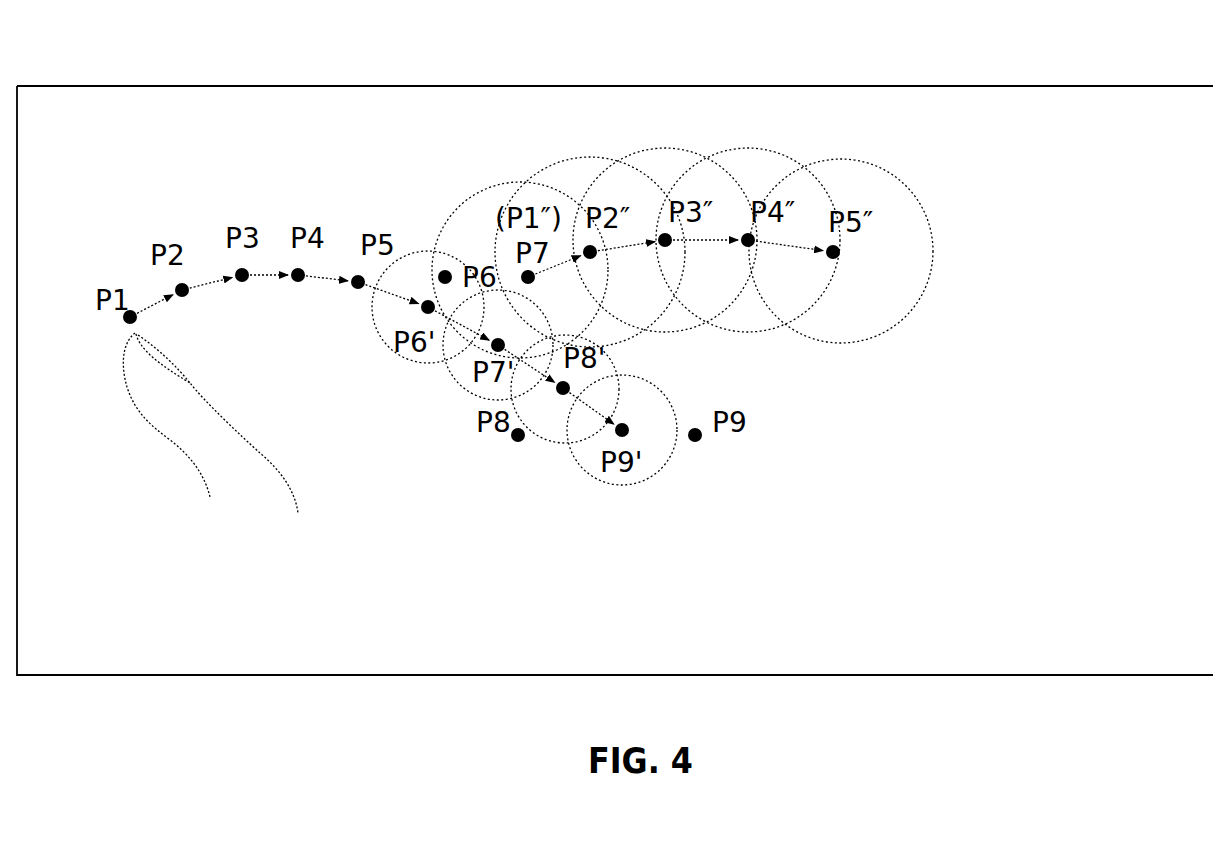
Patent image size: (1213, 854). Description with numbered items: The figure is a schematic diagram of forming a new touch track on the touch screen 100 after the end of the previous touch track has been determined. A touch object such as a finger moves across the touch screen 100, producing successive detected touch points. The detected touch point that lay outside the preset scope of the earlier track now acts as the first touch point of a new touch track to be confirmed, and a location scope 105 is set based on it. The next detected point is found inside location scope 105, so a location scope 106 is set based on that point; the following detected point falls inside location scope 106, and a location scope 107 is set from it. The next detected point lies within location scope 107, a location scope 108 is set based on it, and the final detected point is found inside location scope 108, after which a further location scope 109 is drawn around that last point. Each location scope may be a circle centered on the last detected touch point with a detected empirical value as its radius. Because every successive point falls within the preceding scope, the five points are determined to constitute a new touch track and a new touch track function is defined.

The touch screen 100 is at (135, 133).
The location scope 105 is at (478, 206).
The location scope 106 is at (571, 180).
The location scope 107 is at (646, 160).
The location scope 108 is at (752, 158).
The fifth search region 109 is at (892, 190).